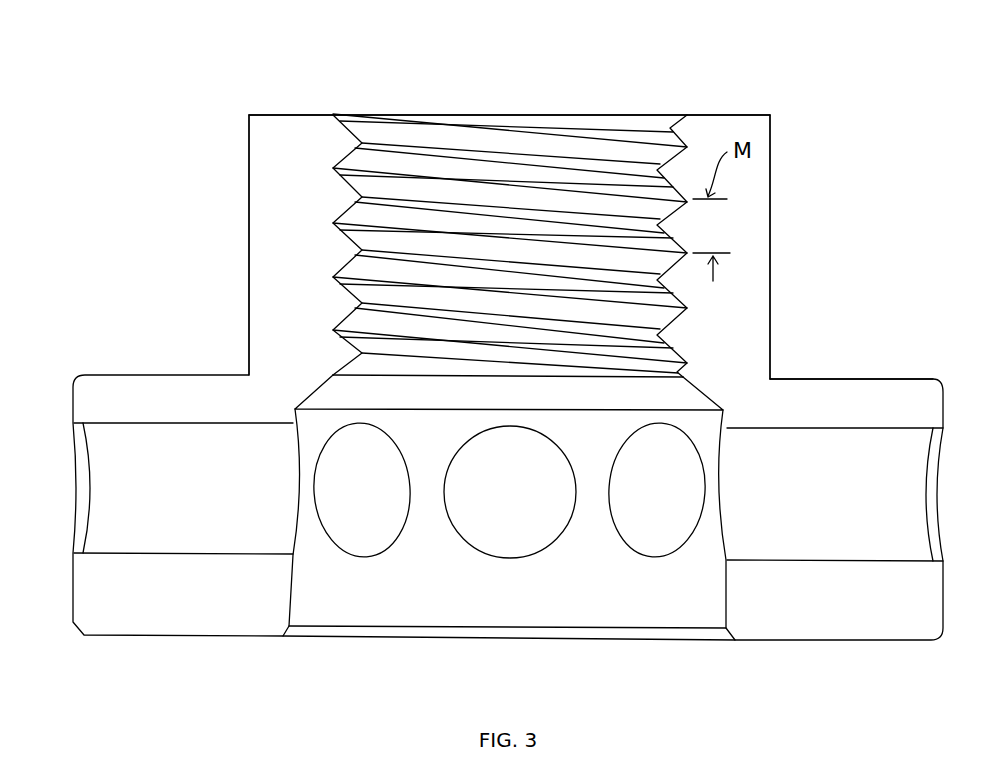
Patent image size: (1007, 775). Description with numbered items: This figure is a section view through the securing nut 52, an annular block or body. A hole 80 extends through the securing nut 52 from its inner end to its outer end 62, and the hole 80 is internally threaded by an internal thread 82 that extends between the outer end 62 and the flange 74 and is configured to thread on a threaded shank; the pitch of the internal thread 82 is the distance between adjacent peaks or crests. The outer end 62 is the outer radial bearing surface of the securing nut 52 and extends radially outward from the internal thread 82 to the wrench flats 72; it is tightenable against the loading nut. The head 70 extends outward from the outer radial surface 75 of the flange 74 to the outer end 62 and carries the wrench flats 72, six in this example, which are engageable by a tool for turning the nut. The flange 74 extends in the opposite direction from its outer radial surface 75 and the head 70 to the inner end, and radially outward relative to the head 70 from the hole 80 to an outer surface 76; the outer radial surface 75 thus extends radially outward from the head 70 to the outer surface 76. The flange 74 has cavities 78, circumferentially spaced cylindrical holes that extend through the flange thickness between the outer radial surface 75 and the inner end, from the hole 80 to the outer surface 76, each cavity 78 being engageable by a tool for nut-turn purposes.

The securing nut 52 is at (778, 160).
The outer end 62 is at (292, 113).
The head 70 is at (773, 226).
The wrench flats 72 is at (250, 196).
The flange 74 is at (862, 391).
The outer radial surface 75 is at (828, 379).
The outer surface 76 is at (73, 606).
The cavities 78 is at (186, 501).
The hole 80 is at (460, 588).
The internal thread 82 is at (375, 190).